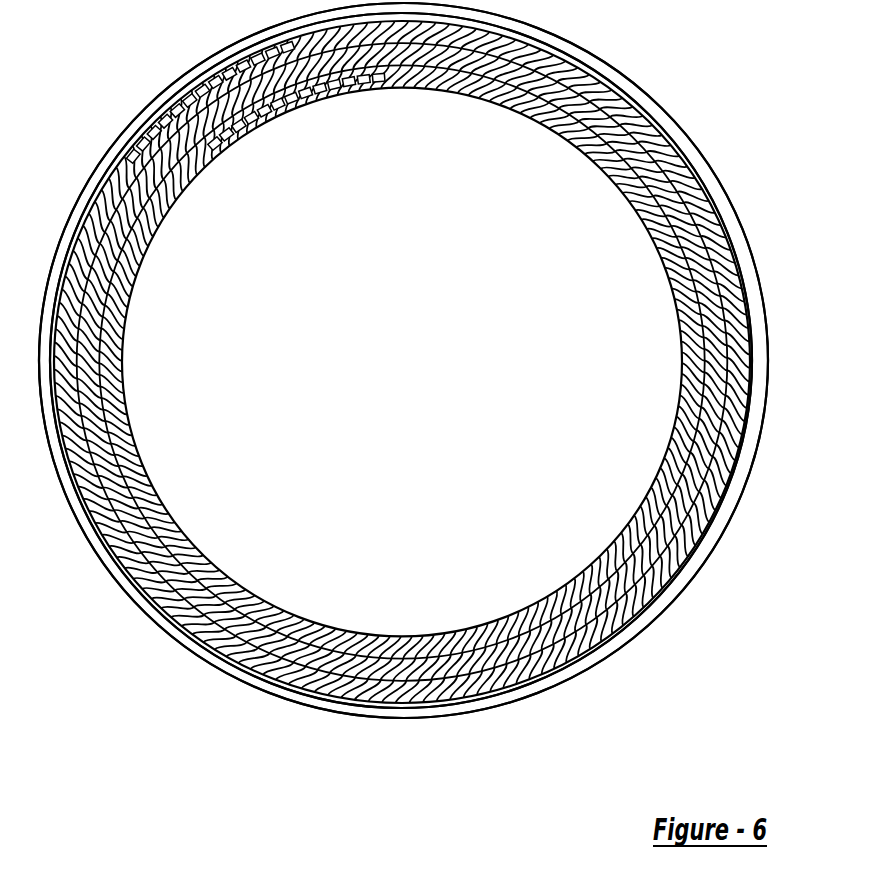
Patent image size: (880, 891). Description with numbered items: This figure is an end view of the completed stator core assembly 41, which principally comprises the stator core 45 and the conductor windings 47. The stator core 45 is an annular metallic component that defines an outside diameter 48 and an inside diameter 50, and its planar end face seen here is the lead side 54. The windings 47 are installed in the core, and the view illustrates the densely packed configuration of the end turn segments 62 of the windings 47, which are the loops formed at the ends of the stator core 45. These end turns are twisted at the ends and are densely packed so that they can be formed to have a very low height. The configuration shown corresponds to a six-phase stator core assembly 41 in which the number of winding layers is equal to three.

The stator core assembly 41 is at (187, 660).
The stator core 45 is at (293, 704).
The conductor windings 47 is at (378, 700).
The outside diameter 48 is at (660, 617).
The inside diameter 50 is at (303, 633).
The lead side 54 is at (520, 693).
The end turn segments 62 is at (87, 505).